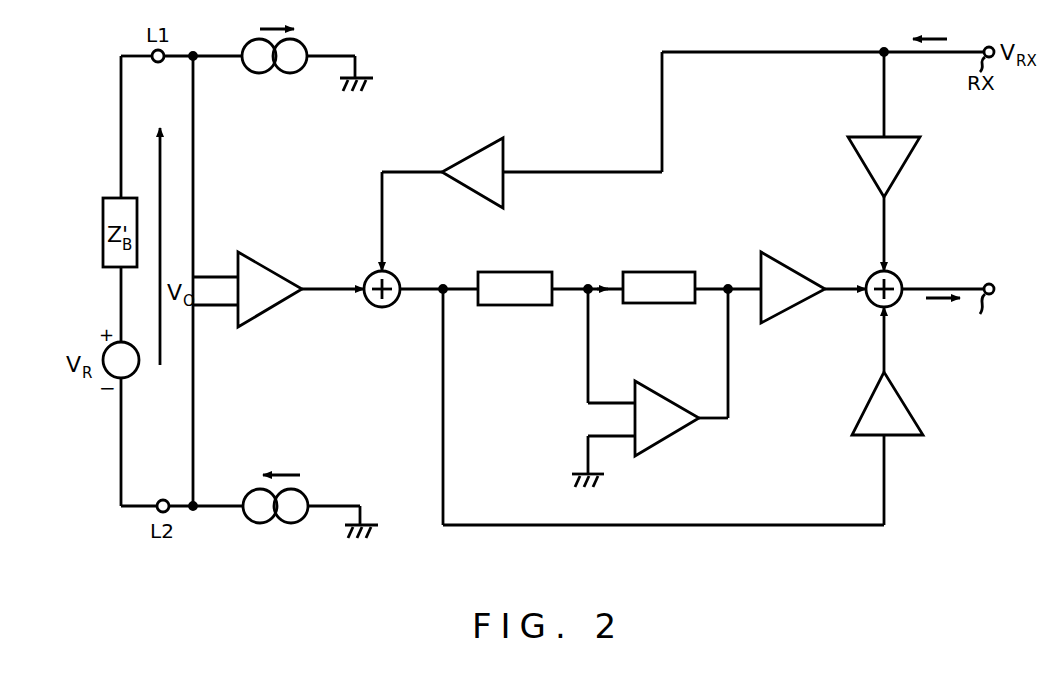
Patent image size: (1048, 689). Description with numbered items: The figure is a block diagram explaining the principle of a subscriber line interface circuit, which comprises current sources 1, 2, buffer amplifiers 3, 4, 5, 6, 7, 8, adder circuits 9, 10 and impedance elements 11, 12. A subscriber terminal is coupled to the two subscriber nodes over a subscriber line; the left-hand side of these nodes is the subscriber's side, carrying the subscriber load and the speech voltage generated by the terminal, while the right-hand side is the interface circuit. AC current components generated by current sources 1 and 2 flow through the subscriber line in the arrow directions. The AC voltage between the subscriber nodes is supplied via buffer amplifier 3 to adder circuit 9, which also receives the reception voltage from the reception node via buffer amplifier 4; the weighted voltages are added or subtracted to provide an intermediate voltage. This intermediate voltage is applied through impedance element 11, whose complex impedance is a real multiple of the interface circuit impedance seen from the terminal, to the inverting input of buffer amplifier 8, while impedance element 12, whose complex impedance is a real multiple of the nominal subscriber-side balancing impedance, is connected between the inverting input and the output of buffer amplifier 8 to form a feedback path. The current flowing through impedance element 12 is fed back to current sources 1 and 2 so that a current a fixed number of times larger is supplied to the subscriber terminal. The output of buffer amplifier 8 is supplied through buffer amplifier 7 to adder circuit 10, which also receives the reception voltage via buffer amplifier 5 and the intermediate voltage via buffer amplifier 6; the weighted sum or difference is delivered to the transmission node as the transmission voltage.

The current source 1 is at (308, 41).
The current source 2 is at (305, 488).
The buffer amplifier 3 is at (272, 266).
The buffer amplifier 4 is at (505, 143).
The buffer amplifier 5 is at (906, 137).
The buffer amplifier 6 is at (906, 390).
The buffer amplifier 7 is at (792, 267).
The buffer amplifier 8 is at (666, 394).
The adder circuit 9 is at (397, 273).
The adder circuit 10 is at (905, 277).
The impedance element 11 is at (517, 272).
The impedance element 12 is at (656, 272).